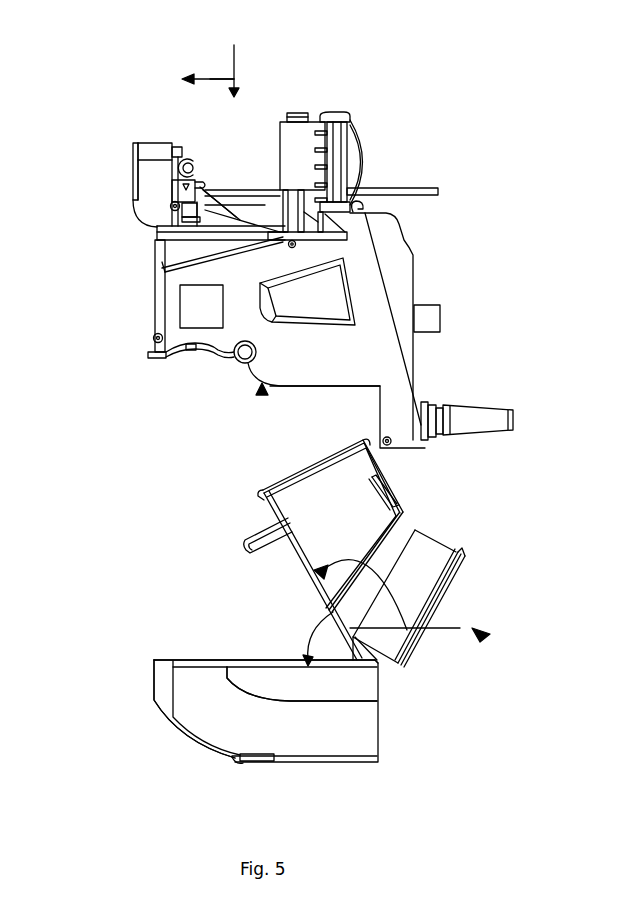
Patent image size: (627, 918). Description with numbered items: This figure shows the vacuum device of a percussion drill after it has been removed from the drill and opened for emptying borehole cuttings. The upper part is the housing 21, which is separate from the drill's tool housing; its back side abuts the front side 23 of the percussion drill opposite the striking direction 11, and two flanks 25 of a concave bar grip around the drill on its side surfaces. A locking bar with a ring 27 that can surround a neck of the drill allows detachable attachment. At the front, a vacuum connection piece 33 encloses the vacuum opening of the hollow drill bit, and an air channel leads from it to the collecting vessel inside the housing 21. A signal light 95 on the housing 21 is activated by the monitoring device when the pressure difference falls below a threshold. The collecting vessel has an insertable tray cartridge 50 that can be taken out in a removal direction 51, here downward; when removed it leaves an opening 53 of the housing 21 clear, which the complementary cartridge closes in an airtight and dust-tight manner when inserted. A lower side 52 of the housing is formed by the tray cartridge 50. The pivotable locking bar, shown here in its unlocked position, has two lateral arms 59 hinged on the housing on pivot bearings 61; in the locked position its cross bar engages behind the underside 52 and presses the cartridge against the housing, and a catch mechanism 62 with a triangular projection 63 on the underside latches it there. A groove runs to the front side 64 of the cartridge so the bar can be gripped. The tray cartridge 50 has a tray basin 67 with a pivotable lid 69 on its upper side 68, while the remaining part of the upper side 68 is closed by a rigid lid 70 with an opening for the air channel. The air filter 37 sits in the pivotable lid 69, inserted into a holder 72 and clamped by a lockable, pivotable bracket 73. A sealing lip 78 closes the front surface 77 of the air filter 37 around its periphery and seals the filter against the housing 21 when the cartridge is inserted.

The striking direction 11 is at (220, 82).
The housing 21 is at (398, 262).
The front side 23 is at (428, 375).
The flanks 25 is at (433, 316).
The ring 27 is at (334, 162).
The vacuum connection piece 33 is at (150, 158).
The air filter 37 is at (425, 548).
The tray cartridge 50 is at (485, 636).
The removal direction 51 is at (236, 63).
The lower side 52 is at (340, 765).
The opening 53 is at (262, 396).
The lateral arms 59 is at (197, 360).
The pivot bearings 61 is at (243, 368).
The catch mechanism 62 is at (242, 765).
The projection 63 is at (235, 764).
The front side 64 is at (142, 672).
The tray basin 67 is at (345, 701).
The upper side 68 is at (186, 650).
The pivotable lid 69 is at (265, 568).
The rigid lid 70 is at (377, 665).
The holder 72 is at (396, 503).
The bracket 73 is at (450, 628).
The front surface 77 is at (461, 588).
The sealing lip 78 is at (463, 560).
The signal light 95 is at (190, 298).